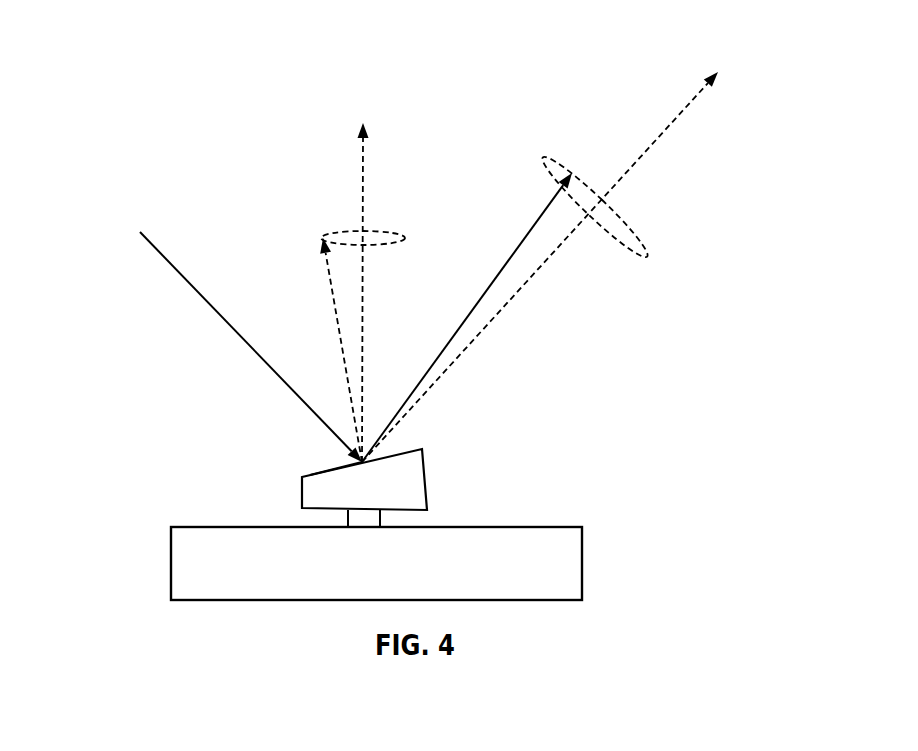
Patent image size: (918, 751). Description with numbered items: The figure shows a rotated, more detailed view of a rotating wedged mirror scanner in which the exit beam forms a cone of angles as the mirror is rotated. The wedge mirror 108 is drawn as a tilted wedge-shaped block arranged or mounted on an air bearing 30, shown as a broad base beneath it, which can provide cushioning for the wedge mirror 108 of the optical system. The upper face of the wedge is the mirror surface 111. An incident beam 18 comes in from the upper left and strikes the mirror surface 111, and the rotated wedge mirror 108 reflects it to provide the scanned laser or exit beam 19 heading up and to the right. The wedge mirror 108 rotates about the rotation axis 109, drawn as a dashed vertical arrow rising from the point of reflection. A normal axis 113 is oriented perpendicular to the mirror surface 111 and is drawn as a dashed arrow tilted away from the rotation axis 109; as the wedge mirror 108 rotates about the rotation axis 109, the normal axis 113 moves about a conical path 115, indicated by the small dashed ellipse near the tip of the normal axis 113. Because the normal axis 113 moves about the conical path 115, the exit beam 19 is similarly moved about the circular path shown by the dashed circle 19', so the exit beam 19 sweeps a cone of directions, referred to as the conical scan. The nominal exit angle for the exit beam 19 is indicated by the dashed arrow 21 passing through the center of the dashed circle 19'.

The incident beam 18 is at (163, 260).
The exit beam 19 is at (467, 317).
The dashed circle 19' is at (626, 207).
The nominal exit angle 21 is at (688, 103).
The air bearing 30 is at (582, 564).
The wedge mirror 108 is at (442, 472).
The rotation axis 109 is at (365, 183).
The mirror surface 111 is at (322, 473).
The normal axis 113 is at (335, 307).
The conical path 115 is at (383, 247).